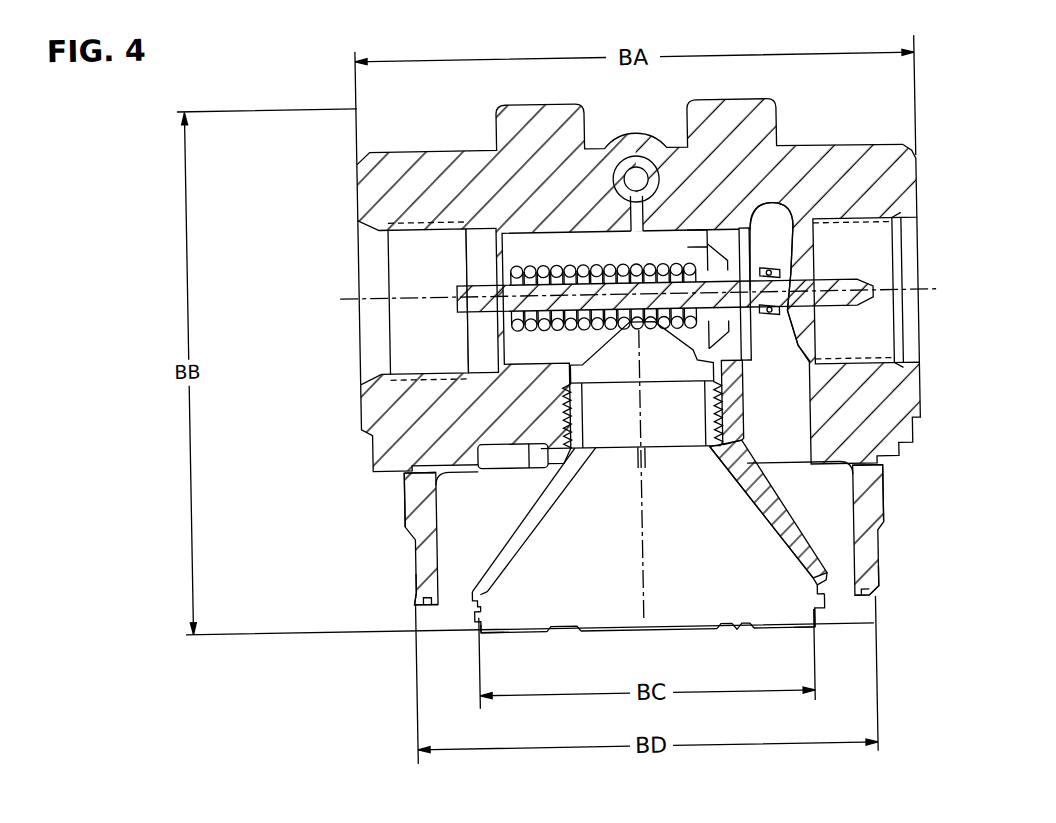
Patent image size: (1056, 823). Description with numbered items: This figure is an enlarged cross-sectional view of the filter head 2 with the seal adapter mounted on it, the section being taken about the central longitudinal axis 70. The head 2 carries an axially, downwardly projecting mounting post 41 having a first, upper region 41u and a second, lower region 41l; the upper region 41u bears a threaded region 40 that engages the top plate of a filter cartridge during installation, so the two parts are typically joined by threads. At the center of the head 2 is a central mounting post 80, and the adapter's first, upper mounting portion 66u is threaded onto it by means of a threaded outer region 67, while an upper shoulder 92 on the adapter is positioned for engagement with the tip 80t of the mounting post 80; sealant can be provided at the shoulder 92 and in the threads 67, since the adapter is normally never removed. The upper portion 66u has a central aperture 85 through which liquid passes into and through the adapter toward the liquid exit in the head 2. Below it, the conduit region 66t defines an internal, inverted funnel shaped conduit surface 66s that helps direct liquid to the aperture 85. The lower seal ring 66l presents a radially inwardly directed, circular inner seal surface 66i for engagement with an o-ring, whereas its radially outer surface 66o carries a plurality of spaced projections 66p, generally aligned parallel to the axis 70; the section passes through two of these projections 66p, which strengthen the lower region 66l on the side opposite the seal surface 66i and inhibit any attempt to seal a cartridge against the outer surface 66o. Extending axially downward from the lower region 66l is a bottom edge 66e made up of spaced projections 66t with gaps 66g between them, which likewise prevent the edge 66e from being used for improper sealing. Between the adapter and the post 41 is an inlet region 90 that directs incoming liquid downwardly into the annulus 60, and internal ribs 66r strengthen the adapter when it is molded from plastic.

The head 2 is at (940, 125).
The threaded region 40 is at (641, 528).
The mounting post 41 is at (425, 548).
The first (upper) region of mounting post 41u is at (421, 488).
The second (lower) region of mounting post 41l is at (425, 589).
The annulus 60 is at (646, 503).
The lower or bottom edge 66e is at (503, 631).
The gaps 66g is at (553, 631).
The inner seal surface 66i is at (809, 600).
The second (lower) seal ring 66l is at (819, 610).
The radially outer surface 66o is at (469, 614).
The spaced projections 66p is at (469, 602).
The internal ribs 66r is at (509, 540).
The conduit surface 66s is at (533, 521).
The conduit region 66t is at (738, 490).
The first (upper) mounting portion 66u is at (710, 418).
The threaded outer region 67 is at (572, 409).
The central longitudinal axis 70 is at (644, 587).
The central mounting post 80 is at (767, 391).
The tip of mounting post 80t is at (727, 439).
The central aperture 85 is at (583, 416).
The inlet region 90 is at (446, 497).
The upper shoulder 92 is at (554, 437).